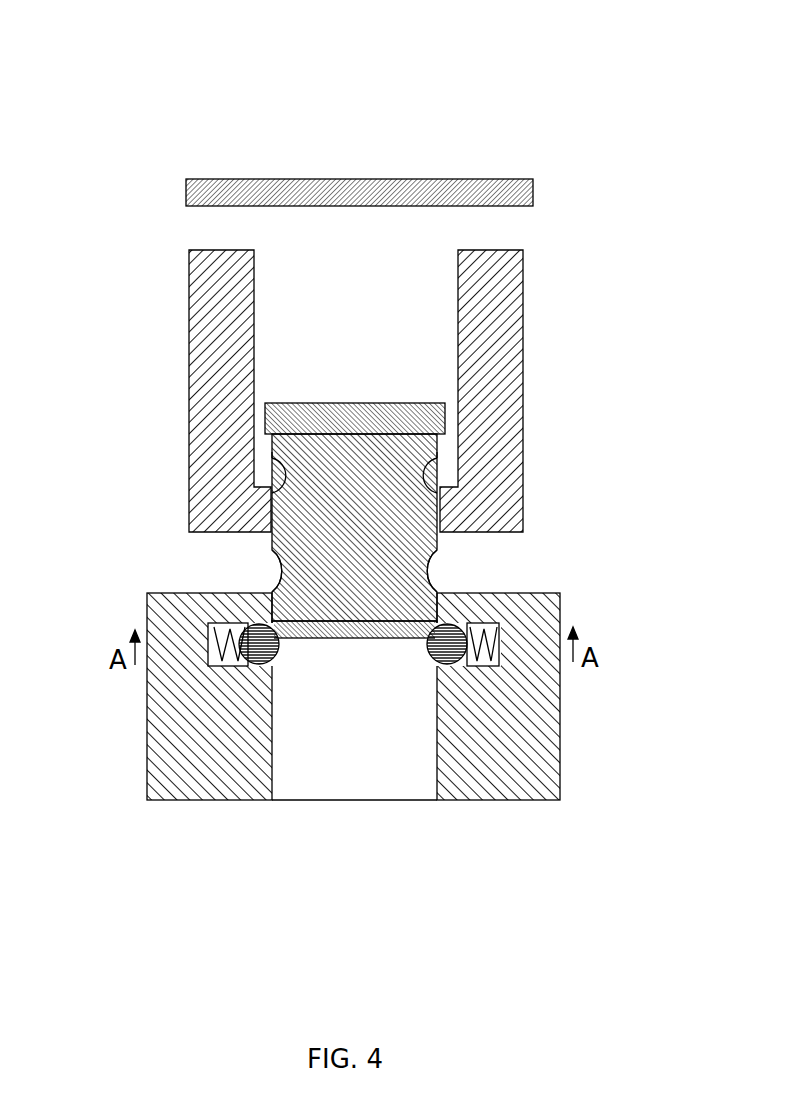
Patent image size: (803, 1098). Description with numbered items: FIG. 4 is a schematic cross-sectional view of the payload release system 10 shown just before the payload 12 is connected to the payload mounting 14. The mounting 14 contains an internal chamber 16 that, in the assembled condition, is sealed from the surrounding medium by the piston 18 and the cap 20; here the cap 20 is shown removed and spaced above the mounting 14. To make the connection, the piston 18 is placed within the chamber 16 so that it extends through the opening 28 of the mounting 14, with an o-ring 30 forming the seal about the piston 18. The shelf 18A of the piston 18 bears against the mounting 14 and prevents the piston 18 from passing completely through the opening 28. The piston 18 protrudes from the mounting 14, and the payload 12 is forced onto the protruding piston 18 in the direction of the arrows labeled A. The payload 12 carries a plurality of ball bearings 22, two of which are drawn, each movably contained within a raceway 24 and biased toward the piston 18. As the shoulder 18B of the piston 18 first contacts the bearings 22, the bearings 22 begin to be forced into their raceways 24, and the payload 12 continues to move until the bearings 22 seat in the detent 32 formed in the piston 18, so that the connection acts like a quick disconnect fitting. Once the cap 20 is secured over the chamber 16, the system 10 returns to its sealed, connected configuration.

The payload release system 10 is at (640, 114).
The payload 12 is at (369, 718).
The payload mounting 14 is at (188, 344).
The internal chamber 16 is at (362, 305).
The piston 18 is at (364, 517).
The shelf 18A is at (318, 403).
The shoulder 18B is at (390, 638).
The cap 20 is at (254, 179).
The ball bearings 22 is at (432, 657).
The raceway 24 is at (208, 593).
The opening 28 is at (272, 458).
The o-ring 30 is at (283, 497).
The detent 32 is at (278, 563).